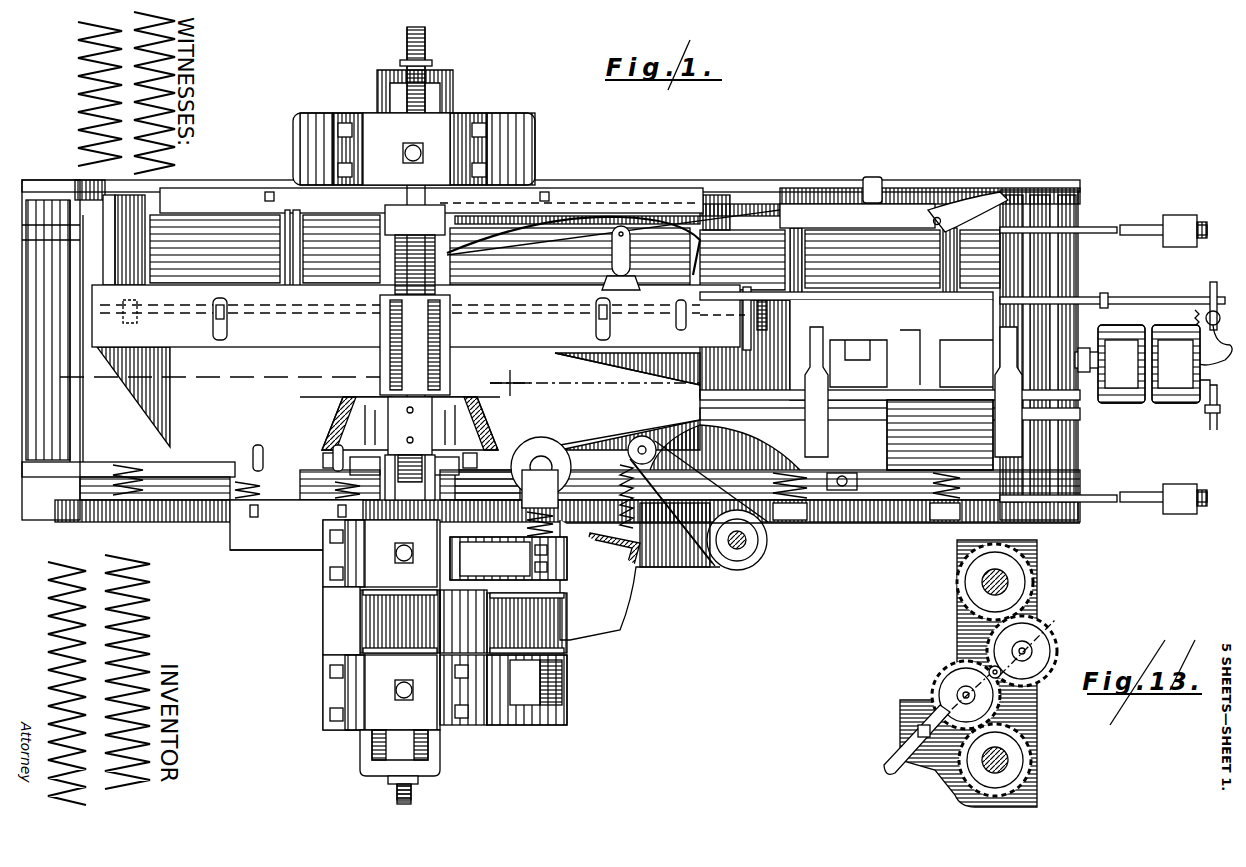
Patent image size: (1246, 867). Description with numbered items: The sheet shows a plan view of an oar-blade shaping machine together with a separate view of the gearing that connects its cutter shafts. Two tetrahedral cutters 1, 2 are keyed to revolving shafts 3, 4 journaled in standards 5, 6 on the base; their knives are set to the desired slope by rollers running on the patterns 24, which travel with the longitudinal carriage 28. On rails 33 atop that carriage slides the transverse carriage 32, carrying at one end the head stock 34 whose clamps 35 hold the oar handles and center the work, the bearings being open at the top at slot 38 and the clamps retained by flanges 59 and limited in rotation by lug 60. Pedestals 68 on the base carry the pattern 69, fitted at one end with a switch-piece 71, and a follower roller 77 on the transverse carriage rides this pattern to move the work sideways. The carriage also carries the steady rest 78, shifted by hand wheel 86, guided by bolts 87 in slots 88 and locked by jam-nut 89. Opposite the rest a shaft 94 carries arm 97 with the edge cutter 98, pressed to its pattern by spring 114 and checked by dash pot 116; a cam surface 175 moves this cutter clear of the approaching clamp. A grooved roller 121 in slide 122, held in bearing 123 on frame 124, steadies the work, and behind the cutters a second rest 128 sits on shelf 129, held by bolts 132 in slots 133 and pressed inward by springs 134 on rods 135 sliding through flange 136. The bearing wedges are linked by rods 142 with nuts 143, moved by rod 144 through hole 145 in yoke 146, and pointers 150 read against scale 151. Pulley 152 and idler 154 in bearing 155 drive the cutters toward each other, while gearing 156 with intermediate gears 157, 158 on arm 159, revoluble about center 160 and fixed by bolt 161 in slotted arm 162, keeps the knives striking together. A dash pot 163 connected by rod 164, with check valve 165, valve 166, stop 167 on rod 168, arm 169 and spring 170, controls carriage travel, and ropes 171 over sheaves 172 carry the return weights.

In FIG. 1, the cutter 1 is at (378, 404).
In FIG. 1, the cutter 2 is at (517, 106).
In FIG. 1, the revolving shaft 3 is at (1115, 499).
In FIG. 1, the revolving shaft 4 is at (780, 178).
In FIG. 1, the standard 5 is at (1020, 352).
In FIG. 1, the standard 6 is at (381, 625).
In FIG. 1, the patterns 24 is at (640, 196).
In FIG. 1, the longitudinal carriage 28 is at (767, 495).
In FIG. 1, the transverse carriage 32 is at (698, 501).
In FIG. 1, the rails 33 is at (219, 242).
In FIG. 1, the head stock 34 is at (940, 435).
In FIG. 1, the clamps 35 is at (825, 380).
In FIG. 1, the slot 38 is at (890, 405).
In FIG. 1, the flanges 59 is at (925, 362).
In FIG. 1, the lug 60 is at (835, 472).
In FIG. 1, the arms or pedestals 68 is at (873, 177).
In FIG. 1, the pattern 69 is at (805, 210).
In FIG. 1, the switch-piece 71 is at (965, 200).
In FIG. 1, the roller 77 is at (612, 236).
In FIG. 1, the steady rest 78 is at (416, 316).
In FIG. 1, the hand wheel 86 is at (747, 290).
In FIG. 1, the bolts 87 is at (232, 296).
In FIG. 1, the slots 88 is at (228, 324).
In FIG. 1, the jam-nut 89 is at (770, 310).
In FIG. 1, the shaft 94 is at (740, 550).
In FIG. 1, the arm 97 is at (700, 567).
In FIG. 1, the cutter 98 is at (645, 426).
In FIG. 1, the spring 114 is at (652, 567).
In FIG. 1, the dash pot 116 is at (636, 606).
In FIG. 1, the roller 121 is at (545, 440).
In FIG. 1, the slide 122 is at (540, 489).
In FIG. 1, the bearing 123 is at (552, 512).
In FIG. 1, the frame 124 is at (508, 558).
In FIG. 1, the second rest 128 is at (401, 448).
In FIG. 1, the shelf 129 is at (228, 500).
In FIG. 1, the bolts 132 is at (254, 444).
In FIG. 1, the slots 133 is at (268, 446).
In FIG. 1, the springs 134 is at (330, 548).
In FIG. 1, the rods 135 is at (315, 548).
In FIG. 1, the flange 136 is at (232, 550).
In FIG. 1, the rods 142 is at (375, 632).
In FIG. 1, the nuts 143 is at (423, 621).
In FIG. 1, the rod 144 is at (414, 790).
In FIG. 1, the hole 145 is at (392, 780).
In FIG. 1, the yoke 146 is at (445, 754).
In FIG. 1, the pointers 150 is at (412, 80).
In FIG. 1, the scale 151 is at (386, 102).
In FIG. 1, the pulley 152 is at (390, 655).
In FIG. 1, the idler 154 is at (545, 636).
In FIG. 1, the bearing 155 is at (565, 682).
In FIG. 1, the gearing 156 is at (380, 552).
In FIG. 13, the intermediate gear 157 is at (968, 673).
In FIG. 13, the intermediate gear 158 is at (1042, 646).
In FIG. 13, the arm 159 is at (895, 739).
In FIG. 13, the center 160 is at (1005, 680).
In FIG. 13, the bolt 161 is at (924, 740).
In FIG. 13, the slotted arm 162 is at (926, 708).
In FIG. 1, the dash pot 163 is at (1121, 364).
In FIG. 1, the rod 164 is at (1078, 388).
In FIG. 1, the check valve 165 is at (1194, 409).
In FIG. 1, the valve 166 is at (1176, 364).
In FIG. 1, the stop 167 is at (1112, 285).
In FIG. 1, the rod 168 is at (1135, 297).
In FIG. 1, the arm 169 is at (1189, 304).
In FIG. 1, the spring 170 is at (1195, 333).
In FIG. 1, the ropes 171 is at (1102, 226).
In FIG. 1, the sheaves 172 is at (1160, 492).
In FIG. 1, the cam surface 175 is at (755, 456).